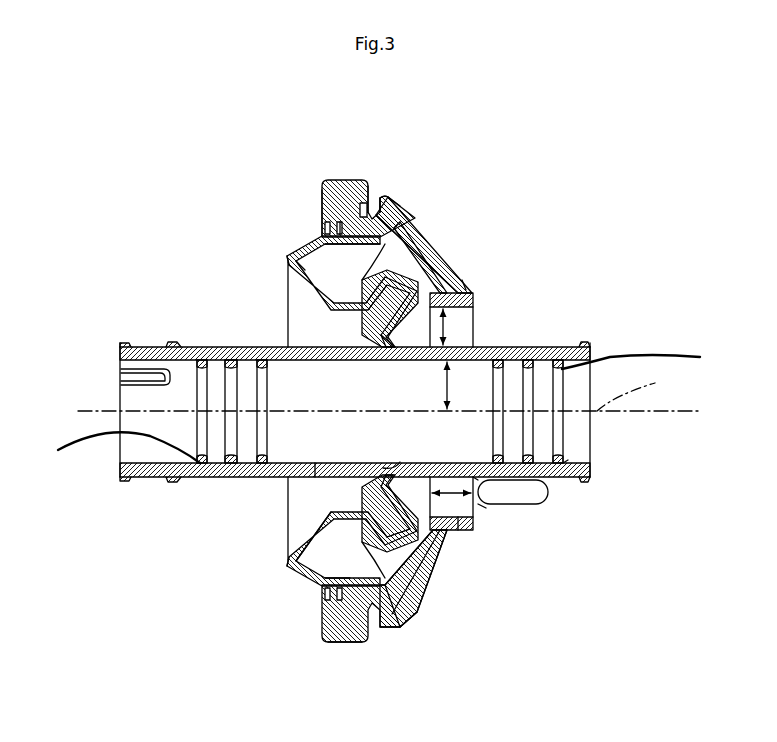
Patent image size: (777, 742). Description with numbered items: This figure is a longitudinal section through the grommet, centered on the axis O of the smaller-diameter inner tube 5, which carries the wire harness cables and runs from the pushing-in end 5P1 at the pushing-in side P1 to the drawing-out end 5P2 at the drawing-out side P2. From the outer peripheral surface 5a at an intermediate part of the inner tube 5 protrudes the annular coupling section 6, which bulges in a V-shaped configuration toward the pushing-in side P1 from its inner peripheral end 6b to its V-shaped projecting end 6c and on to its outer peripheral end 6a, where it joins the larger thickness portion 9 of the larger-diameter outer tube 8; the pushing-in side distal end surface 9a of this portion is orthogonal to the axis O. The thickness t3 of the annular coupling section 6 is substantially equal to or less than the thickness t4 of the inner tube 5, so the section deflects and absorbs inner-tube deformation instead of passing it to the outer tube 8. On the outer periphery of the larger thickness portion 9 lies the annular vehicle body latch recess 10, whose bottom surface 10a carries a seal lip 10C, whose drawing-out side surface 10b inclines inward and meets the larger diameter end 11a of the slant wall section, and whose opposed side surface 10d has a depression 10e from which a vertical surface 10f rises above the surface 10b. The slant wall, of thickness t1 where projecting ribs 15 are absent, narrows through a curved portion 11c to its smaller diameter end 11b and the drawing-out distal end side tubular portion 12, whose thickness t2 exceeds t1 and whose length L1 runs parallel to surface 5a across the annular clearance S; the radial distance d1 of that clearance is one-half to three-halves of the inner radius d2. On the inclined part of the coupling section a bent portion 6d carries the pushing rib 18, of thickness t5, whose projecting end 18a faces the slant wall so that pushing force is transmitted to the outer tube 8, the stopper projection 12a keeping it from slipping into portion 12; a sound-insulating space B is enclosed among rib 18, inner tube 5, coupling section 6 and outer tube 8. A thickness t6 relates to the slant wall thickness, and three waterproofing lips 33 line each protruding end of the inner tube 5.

The inner tube 5 is at (546, 347).
The pushing-in end 5P1 is at (162, 345).
The drawing-out end 5P2 is at (590, 345).
The outer peripheral surface 5a is at (566, 462).
The annular coupling section 6 is at (287, 283).
The outer peripheral end 6a is at (321, 240).
The inner peripheral end 6b is at (386, 335).
The V-shaped projecting end 6c is at (288, 556).
The bent portion 6d is at (360, 513).
The outer tube 8 is at (390, 192).
The larger thickness portion 9 is at (324, 182).
The pushing-in side distal end surface 9a is at (322, 190).
The vehicle body latch recess 10 is at (440, 246).
The bottom surface 10a is at (330, 600).
The drawing-out side surface 10b is at (410, 630).
The seal lip 10C is at (330, 643).
The side surface 10d is at (371, 216).
The depression 10e is at (344, 222).
The vertical surface 10f is at (388, 196).
The larger diameter end 11a is at (406, 640).
The smaller diameter end 11b is at (450, 548).
The curved portion 11c is at (430, 600).
The drawing-out distal end side tubular portion 12 is at (475, 300).
The stopper projection 12a is at (446, 566).
The projecting ribs 15 is at (466, 286).
The pushing rib 18 is at (421, 244).
The projecting end 18a is at (458, 270).
The waterproofing lips 33 is at (374, 405).
The annular clearance S is at (548, 492).
The axis O is at (389, 391).
The sound-insulating space B is at (289, 256).
The thickness of the slant wall section t1 is at (420, 250).
The thickness of the drawing-out distal end side tubular portion t2 is at (458, 500).
The thickness of the annular coupling section t3 is at (325, 283).
The thickness of the inner tube t4 is at (315, 498).
The thickness of the pushing rib t5 is at (386, 532).
The thickness of the bending stress absorbing portion t6 is at (428, 500).
The radial distance of the annular clearance d1 is at (450, 325).
The inner radius of the inner tube d2 is at (459, 385).
The length of the drawing-out distal end side tubular portion L1 is at (480, 497).
The pushing-in side P1 is at (95, 265).
The drawing-out side P2 is at (643, 265).